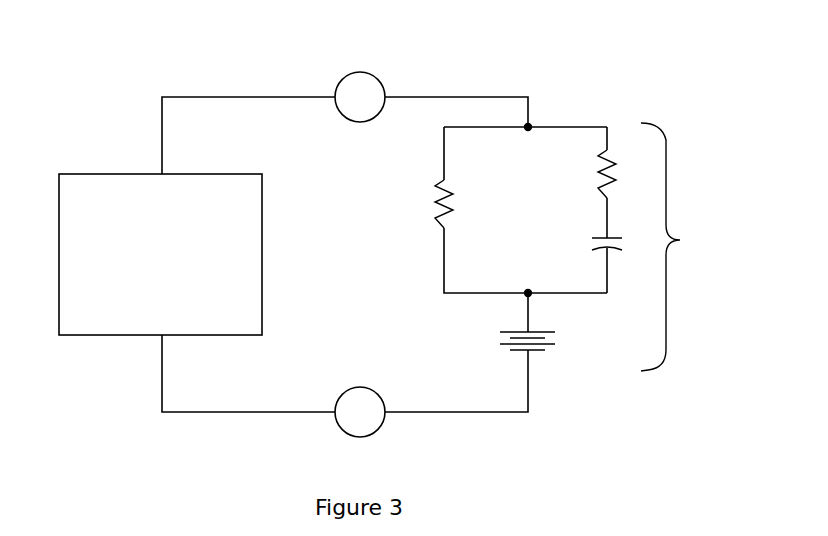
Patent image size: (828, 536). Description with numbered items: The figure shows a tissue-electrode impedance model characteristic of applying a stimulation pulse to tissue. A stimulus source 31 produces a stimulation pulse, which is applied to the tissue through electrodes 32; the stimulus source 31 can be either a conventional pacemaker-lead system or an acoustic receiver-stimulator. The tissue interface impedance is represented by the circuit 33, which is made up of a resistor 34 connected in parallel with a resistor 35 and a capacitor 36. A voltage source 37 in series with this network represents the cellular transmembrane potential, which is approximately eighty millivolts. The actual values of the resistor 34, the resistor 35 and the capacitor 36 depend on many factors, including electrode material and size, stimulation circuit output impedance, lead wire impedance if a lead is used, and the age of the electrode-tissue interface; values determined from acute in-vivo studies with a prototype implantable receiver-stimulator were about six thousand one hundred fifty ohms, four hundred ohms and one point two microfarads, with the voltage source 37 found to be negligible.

The stimulus source 31 is at (120, 174).
The electrodes 32 is at (340, 77).
The circuit 33 is at (681, 240).
The resistor 34 is at (436, 190).
The resistor 35 is at (595, 168).
The capacitor 36 is at (592, 237).
The voltage source 37 is at (493, 330).